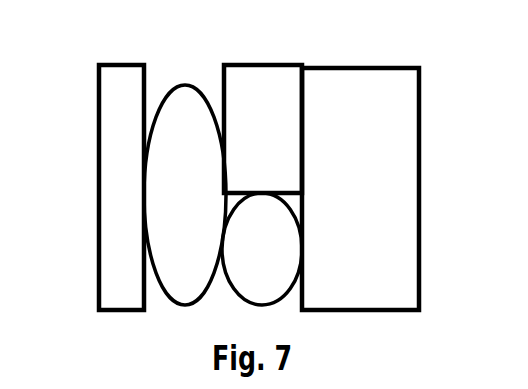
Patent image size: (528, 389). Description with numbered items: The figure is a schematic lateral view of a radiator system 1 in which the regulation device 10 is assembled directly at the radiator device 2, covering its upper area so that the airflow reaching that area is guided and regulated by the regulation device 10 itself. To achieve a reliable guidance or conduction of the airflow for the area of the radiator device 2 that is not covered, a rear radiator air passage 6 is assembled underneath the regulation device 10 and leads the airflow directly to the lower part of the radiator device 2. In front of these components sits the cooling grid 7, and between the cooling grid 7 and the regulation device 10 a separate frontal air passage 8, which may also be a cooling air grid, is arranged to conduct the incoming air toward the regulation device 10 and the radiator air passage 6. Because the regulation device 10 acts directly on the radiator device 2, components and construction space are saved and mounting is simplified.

The device 1 is at (459, 84).
The radiator device 2 is at (369, 208).
The radiator air passage 6 is at (272, 262).
The cooling grid 7 is at (130, 204).
The frontal air passage 8 is at (194, 204).
The regulation device 10 is at (247, 144).